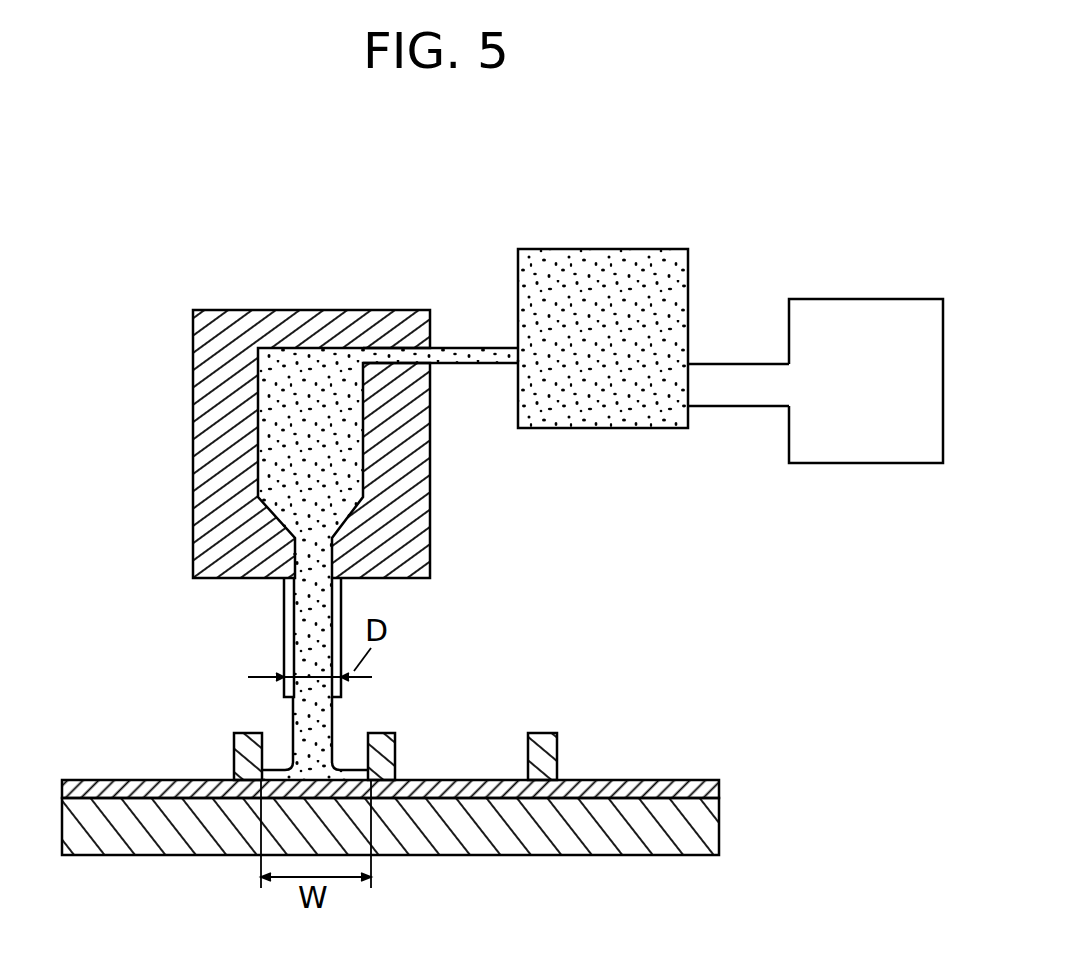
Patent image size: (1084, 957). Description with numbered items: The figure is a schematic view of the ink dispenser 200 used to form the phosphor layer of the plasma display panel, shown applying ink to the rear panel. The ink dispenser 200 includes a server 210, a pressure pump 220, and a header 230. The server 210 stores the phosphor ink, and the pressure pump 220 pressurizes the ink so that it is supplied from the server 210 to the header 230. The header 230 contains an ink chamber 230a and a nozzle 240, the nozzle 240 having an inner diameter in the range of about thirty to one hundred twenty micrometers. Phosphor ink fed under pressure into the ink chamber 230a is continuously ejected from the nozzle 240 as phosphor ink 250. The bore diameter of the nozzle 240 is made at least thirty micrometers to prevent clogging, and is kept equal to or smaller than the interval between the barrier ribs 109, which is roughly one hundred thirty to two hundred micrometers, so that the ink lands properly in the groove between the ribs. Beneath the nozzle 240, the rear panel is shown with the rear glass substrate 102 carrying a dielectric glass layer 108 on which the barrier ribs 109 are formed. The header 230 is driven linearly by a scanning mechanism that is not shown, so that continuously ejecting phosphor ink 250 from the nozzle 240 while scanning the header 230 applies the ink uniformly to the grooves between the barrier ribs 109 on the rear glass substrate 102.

The ink dispenser 200 is at (432, 283).
The server 210 is at (865, 465).
The pressure pump 220 is at (613, 430).
The header 230 is at (430, 548).
The ink chamber 230a is at (273, 432).
The nozzle 240 is at (283, 645).
The phosphor ink 250 is at (338, 736).
The barrier ribs 109 is at (234, 743).
The dielectric glass layer 108 is at (719, 792).
The rear glass substrate 102 is at (719, 820).